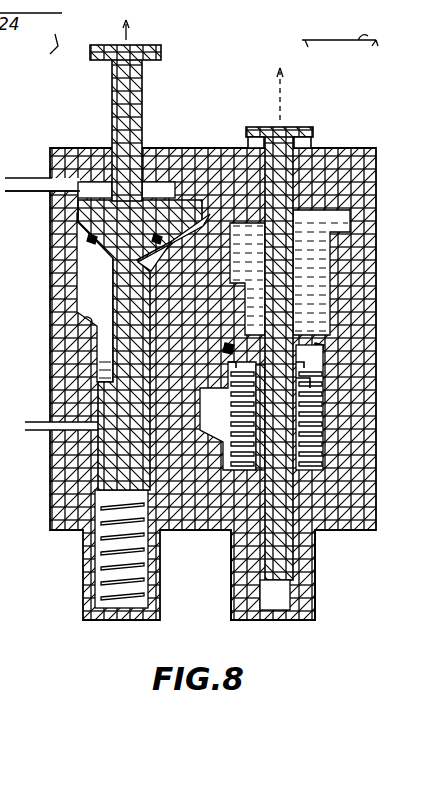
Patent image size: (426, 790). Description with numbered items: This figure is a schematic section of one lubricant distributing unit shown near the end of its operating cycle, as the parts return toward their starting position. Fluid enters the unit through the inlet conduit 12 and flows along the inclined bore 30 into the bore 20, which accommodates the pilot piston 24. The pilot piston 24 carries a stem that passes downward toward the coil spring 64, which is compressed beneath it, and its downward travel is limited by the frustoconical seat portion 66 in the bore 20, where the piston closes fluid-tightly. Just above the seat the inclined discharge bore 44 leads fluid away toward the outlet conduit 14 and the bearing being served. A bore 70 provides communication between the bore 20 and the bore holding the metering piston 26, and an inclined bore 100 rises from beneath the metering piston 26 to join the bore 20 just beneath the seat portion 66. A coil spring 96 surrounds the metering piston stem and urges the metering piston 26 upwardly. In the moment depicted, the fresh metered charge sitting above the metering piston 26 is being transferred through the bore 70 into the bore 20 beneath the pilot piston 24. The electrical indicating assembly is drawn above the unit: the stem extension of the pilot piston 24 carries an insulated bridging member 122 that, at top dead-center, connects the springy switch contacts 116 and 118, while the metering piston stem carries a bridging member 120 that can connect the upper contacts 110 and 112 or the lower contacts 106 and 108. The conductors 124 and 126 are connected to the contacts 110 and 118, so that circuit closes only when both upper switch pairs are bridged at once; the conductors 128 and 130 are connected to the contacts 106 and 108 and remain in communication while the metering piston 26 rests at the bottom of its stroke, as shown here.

The outlet conduit 14 is at (62, 432).
The inclined bore 100 is at (197, 382).
The inclined bore 30 is at (55, 183).
The inlet conduit 12 is at (23, 190).
The frustoconical seat portion 66 is at (82, 322).
The inclined discharge bore 44 is at (62, 421).
The coil spring 64 is at (113, 604).
The bore 20 is at (78, 278).
The switch bridging member 122 is at (120, 60).
The springy switch contact 118 is at (102, 40).
The springy switch contact 116 is at (258, 43).
The electrical conductor 126 is at (58, 54).
The bore 70 is at (198, 230).
The pilot piston 24 is at (78, 221).
The metering piston 26 is at (385, 308).
The coil spring 96 is at (326, 387).
The electrical conductor switch contact 106 is at (253, 137).
The switch bridging member 120 is at (300, 127).
The conductor 128 is at (228, 143).
The electrical conductor switch contact 108 is at (310, 144).
The conductor 130 is at (377, 151).
The springy switch contact 112 is at (256, 30).
The springy switch contact 110 is at (340, 34).
The electrical conductor 124 is at (404, 32).